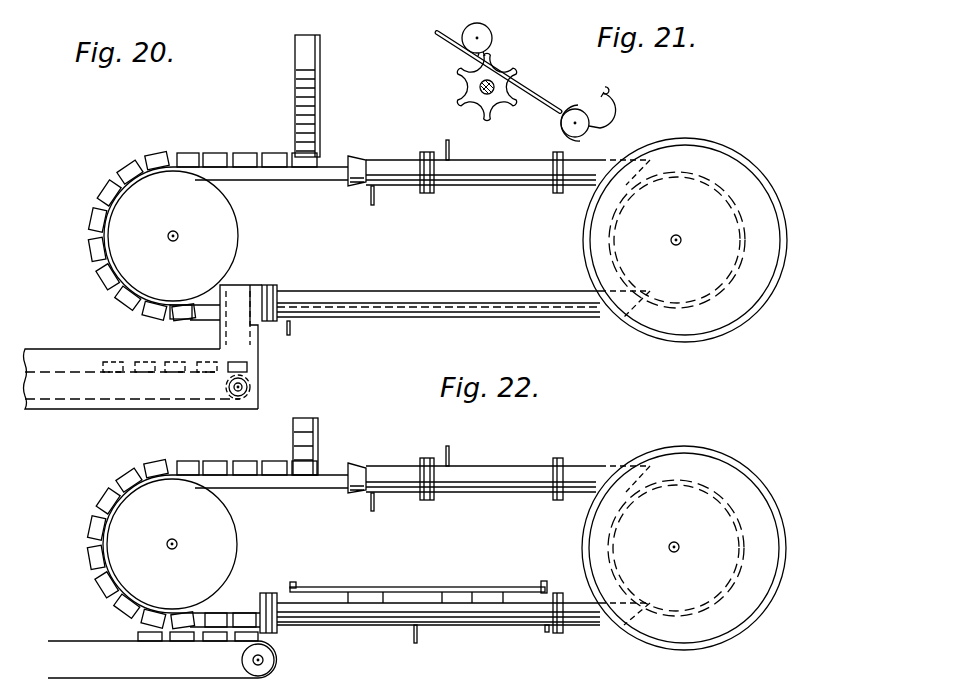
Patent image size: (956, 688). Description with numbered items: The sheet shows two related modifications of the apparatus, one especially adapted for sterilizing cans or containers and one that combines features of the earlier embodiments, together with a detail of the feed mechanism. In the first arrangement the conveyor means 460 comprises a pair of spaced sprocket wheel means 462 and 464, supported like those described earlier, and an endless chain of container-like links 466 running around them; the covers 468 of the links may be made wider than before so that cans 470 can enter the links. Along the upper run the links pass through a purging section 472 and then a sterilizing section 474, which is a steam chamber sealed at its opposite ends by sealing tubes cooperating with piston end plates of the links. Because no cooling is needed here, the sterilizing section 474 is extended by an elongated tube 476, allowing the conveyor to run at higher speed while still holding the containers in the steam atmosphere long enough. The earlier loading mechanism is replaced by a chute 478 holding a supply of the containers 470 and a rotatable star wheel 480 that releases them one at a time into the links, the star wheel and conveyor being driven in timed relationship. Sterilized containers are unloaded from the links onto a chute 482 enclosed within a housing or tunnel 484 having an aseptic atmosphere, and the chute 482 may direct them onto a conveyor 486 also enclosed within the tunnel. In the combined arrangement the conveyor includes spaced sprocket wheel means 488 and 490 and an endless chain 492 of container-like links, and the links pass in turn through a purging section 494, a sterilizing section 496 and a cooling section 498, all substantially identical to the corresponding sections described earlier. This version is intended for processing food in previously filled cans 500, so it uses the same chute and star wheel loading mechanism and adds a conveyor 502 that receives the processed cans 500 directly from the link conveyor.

In FIG. 20, the conveyor means 460 is at (128, 160).
In FIG. 20, the sprocket wheel means 462 is at (215, 237).
In FIG. 20, the sprocket wheel means 464 is at (640, 241).
In FIG. 20, the container-like links 466 is at (226, 152).
In FIG. 21, the container-like links 466 is at (590, 143).
In FIG. 21, the covers 468 is at (612, 98).
In FIG. 20, the cans 470 is at (300, 88).
In FIG. 21, the cans 470 is at (490, 34).
In FIG. 20, the purging section 472 is at (380, 162).
In FIG. 20, the sterilizing section 474 is at (496, 158).
In FIG. 20, the elongated tube 476 is at (416, 290).
In FIG. 21, the chute 478 is at (437, 36).
In FIG. 21, the star wheel 480 is at (470, 88).
In FIG. 20, the chute 482 is at (262, 345).
In FIG. 20, the housing or tunnel 484 is at (250, 385).
In FIG. 20, the conveyor 486 is at (215, 402).
In FIG. 22, the sprocket wheel means 488 is at (218, 528).
In FIG. 22, the sprocket wheel means 490 is at (612, 540).
In FIG. 22, the endless chain 492 is at (206, 460).
In FIG. 22, the purging section 494 is at (388, 466).
In FIG. 22, the sterilizing section 496 is at (592, 468).
In FIG. 22, the cooling section 498 is at (497, 628).
In FIG. 22, the previously filled cans 500 is at (312, 430).
In FIG. 22, the conveyor 502 is at (266, 665).